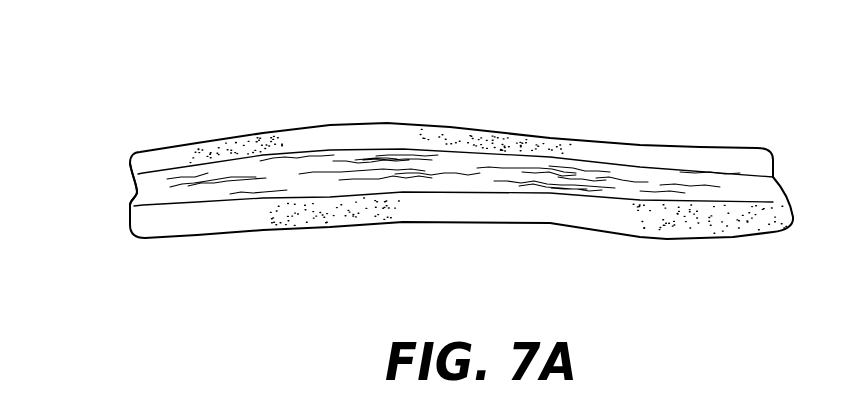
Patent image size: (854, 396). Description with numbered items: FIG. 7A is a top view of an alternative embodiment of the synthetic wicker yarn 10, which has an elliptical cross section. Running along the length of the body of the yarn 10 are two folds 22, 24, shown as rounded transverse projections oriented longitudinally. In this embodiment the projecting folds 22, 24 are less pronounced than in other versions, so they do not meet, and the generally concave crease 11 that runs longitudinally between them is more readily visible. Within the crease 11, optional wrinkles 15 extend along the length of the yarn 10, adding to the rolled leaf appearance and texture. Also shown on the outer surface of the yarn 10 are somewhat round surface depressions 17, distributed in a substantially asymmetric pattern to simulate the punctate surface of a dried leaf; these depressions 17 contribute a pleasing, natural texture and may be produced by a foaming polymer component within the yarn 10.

The yarn 10 is at (749, 121).
The crease 11 is at (137, 192).
The wrinkles 15 is at (480, 178).
The surface depressions 17 is at (317, 218).
The fold 22 is at (170, 228).
The fold 24 is at (169, 156).